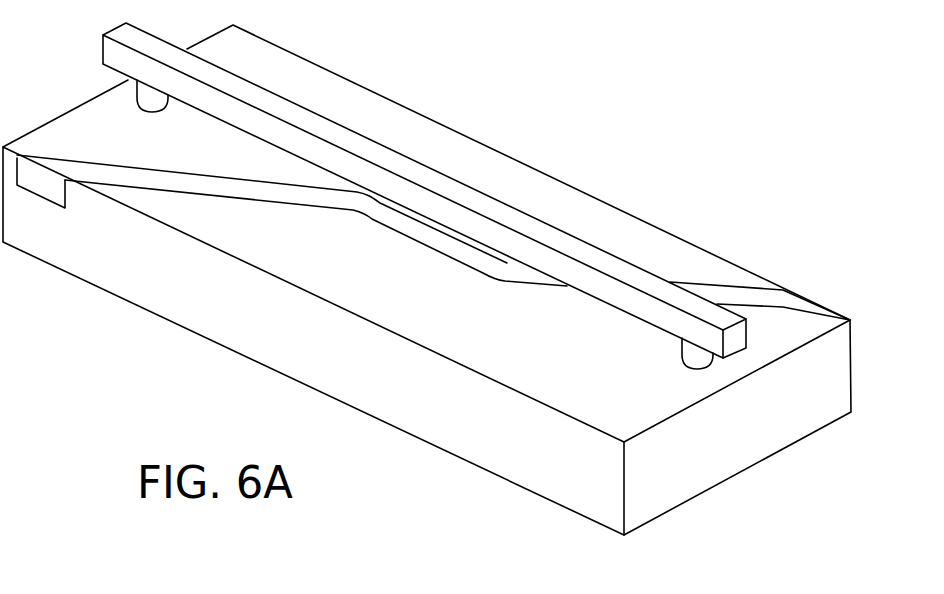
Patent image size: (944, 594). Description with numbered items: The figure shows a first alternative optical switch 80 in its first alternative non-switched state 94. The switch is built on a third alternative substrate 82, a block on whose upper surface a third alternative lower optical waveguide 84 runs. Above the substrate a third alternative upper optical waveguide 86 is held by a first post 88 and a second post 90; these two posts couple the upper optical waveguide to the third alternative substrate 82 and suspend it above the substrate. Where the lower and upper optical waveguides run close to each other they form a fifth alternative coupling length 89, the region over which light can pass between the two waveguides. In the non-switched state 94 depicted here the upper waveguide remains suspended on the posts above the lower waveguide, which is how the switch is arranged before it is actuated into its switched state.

The first alternative optical switch 80 is at (567, 98).
The third alternative substrate 82 is at (663, 497).
The third alternative lower optical waveguide 84 is at (247, 192).
The third alternative upper optical waveguide 86 is at (607, 293).
The first post 88 is at (149, 101).
The fifth alternative coupling length 89 is at (413, 258).
The second post 90 is at (693, 366).
The first alternative non-switched state 94 is at (665, 135).